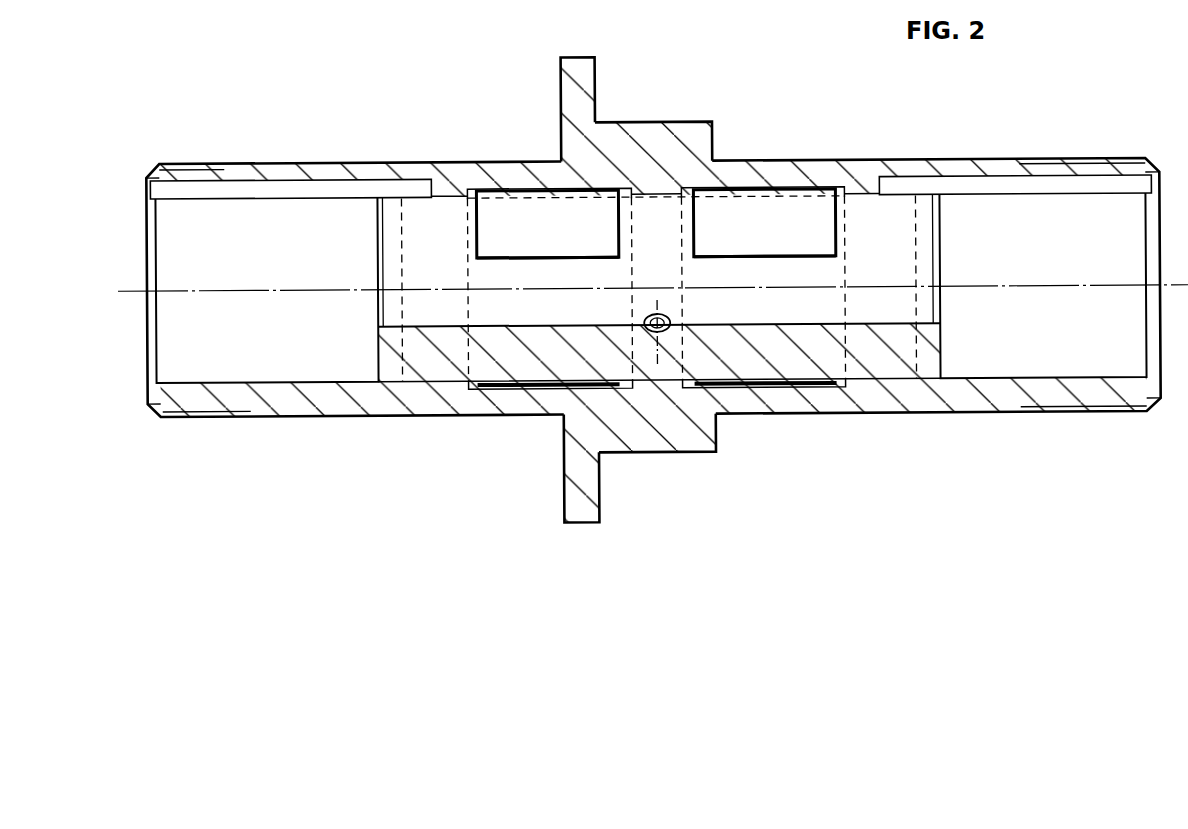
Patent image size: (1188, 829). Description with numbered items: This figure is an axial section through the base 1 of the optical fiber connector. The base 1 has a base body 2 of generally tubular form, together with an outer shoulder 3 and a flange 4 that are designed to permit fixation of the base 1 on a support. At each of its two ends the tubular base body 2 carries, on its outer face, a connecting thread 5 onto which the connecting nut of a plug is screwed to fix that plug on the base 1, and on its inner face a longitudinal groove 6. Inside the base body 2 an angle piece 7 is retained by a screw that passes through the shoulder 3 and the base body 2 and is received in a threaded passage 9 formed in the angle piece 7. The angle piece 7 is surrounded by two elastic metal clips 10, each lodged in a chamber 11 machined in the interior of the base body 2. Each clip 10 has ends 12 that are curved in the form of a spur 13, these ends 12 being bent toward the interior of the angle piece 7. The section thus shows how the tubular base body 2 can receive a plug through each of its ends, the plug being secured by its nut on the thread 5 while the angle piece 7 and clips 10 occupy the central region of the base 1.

The base 1 is at (480, 148).
The base body 2 is at (950, 400).
The outer shoulder 3 is at (677, 440).
The flange 4 is at (583, 492).
The connecting thread 5 is at (245, 412).
The longitudinal groove 6 is at (355, 188).
The angle piece 7 is at (736, 367).
The threaded passage 9 is at (646, 316).
The elastic metal clip 10 is at (506, 390).
The chamber 11 is at (466, 196).
The clip end 12 is at (560, 237).
The spur 13 is at (510, 260).